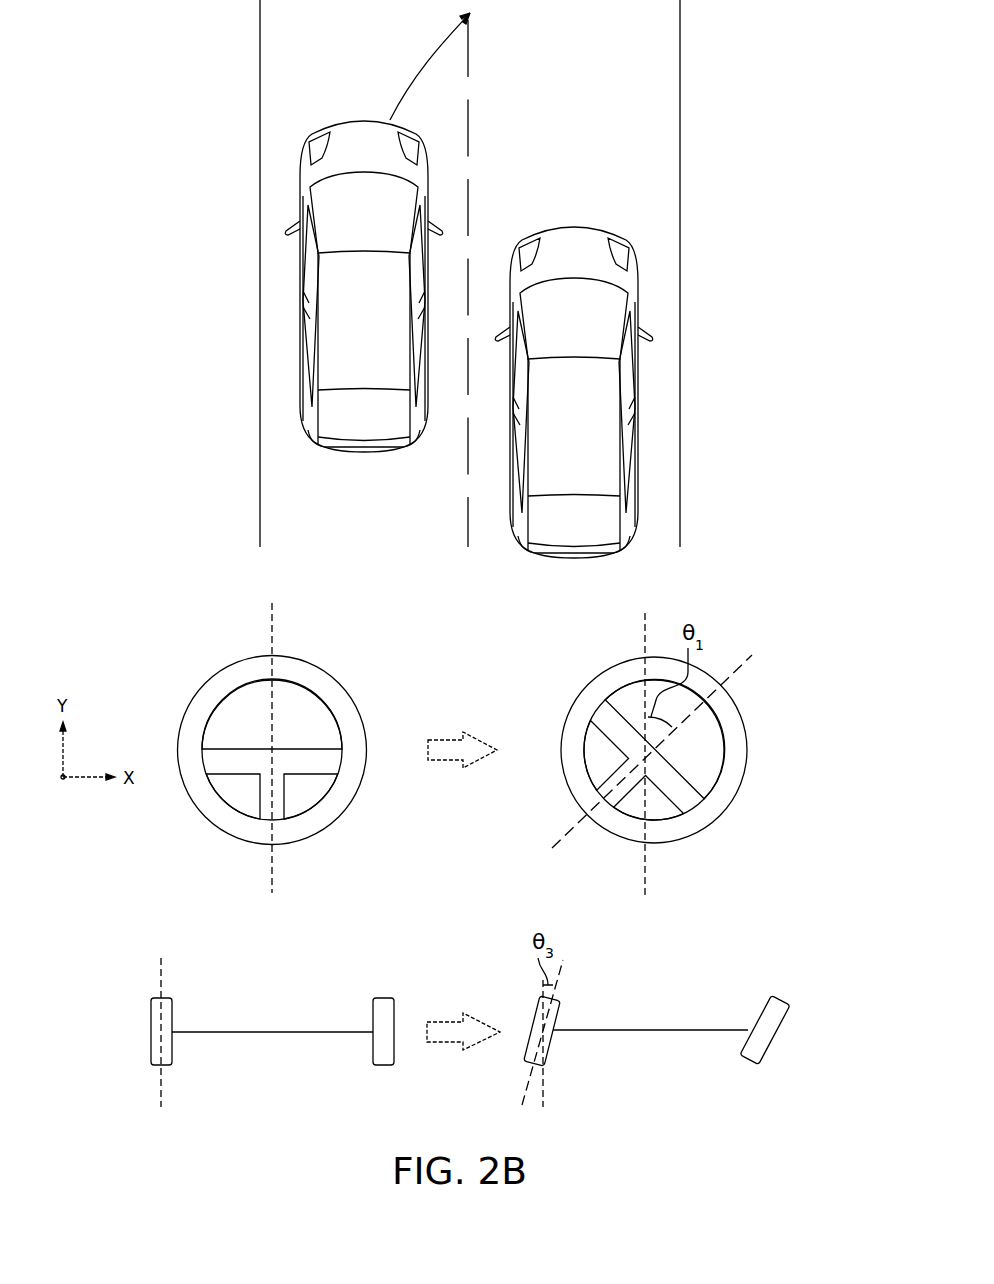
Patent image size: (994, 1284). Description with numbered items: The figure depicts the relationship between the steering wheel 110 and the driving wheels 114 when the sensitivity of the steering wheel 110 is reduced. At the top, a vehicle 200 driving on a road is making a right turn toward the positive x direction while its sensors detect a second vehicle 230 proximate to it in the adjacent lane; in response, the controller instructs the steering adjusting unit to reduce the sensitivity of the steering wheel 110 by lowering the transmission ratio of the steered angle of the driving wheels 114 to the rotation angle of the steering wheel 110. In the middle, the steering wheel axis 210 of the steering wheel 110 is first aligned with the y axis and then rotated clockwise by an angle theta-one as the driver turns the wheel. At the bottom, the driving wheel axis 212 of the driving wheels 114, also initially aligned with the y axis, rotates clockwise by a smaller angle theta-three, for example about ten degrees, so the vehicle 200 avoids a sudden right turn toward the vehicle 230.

The vehicle 200 is at (338, 121).
The vehicle 230 is at (575, 227).
The steering wheel 110 is at (318, 662).
The steering wheel axis 210 is at (270, 625).
The driving wheels 114 is at (151, 1033).
The driving wheel axis 212 is at (160, 970).